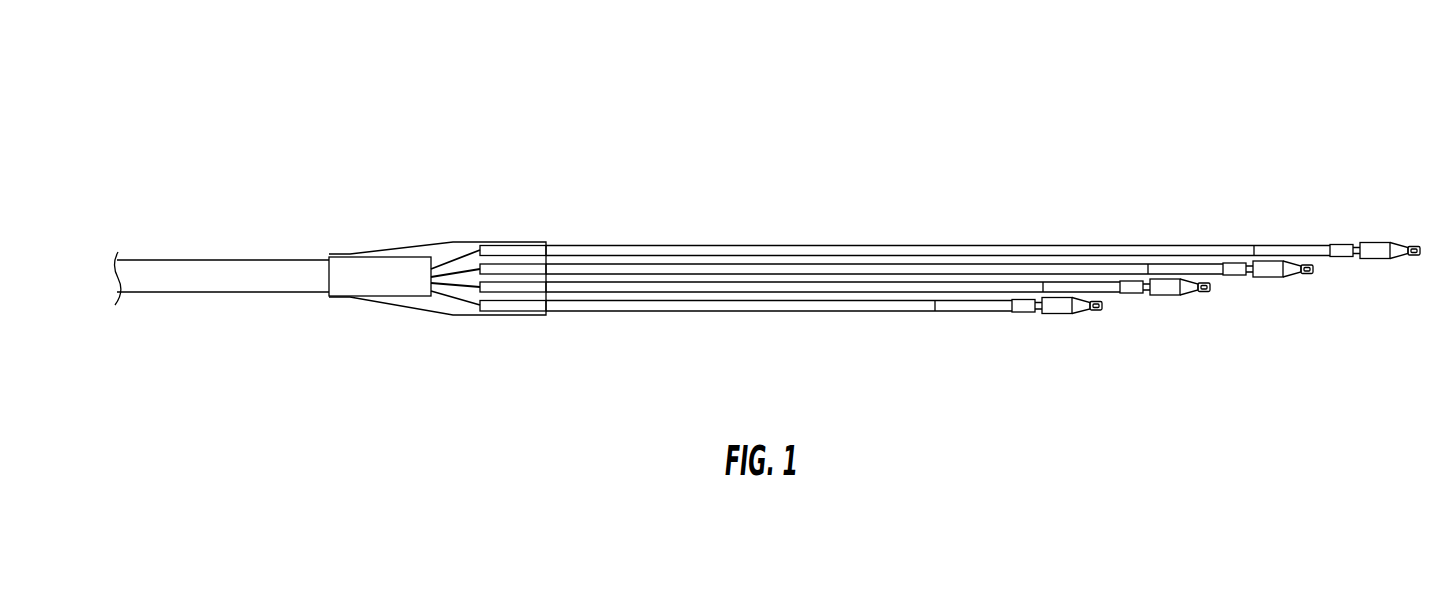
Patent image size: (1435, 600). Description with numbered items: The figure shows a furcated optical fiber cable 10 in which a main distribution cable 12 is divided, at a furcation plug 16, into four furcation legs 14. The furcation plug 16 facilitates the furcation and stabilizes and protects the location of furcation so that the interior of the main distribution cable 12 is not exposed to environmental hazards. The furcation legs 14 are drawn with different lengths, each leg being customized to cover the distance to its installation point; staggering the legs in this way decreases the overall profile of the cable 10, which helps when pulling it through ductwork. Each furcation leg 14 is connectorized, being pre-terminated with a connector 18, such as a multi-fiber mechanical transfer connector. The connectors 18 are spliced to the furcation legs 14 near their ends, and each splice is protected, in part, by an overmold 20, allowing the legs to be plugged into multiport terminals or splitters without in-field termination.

The furcated optical fiber cable 10 is at (486, 90).
The main distribution cable 12 is at (187, 272).
The furcation legs 14 is at (742, 303).
The furcation plug 16 is at (450, 277).
The connector 18 is at (1058, 308).
The overmold 20 is at (1300, 250).